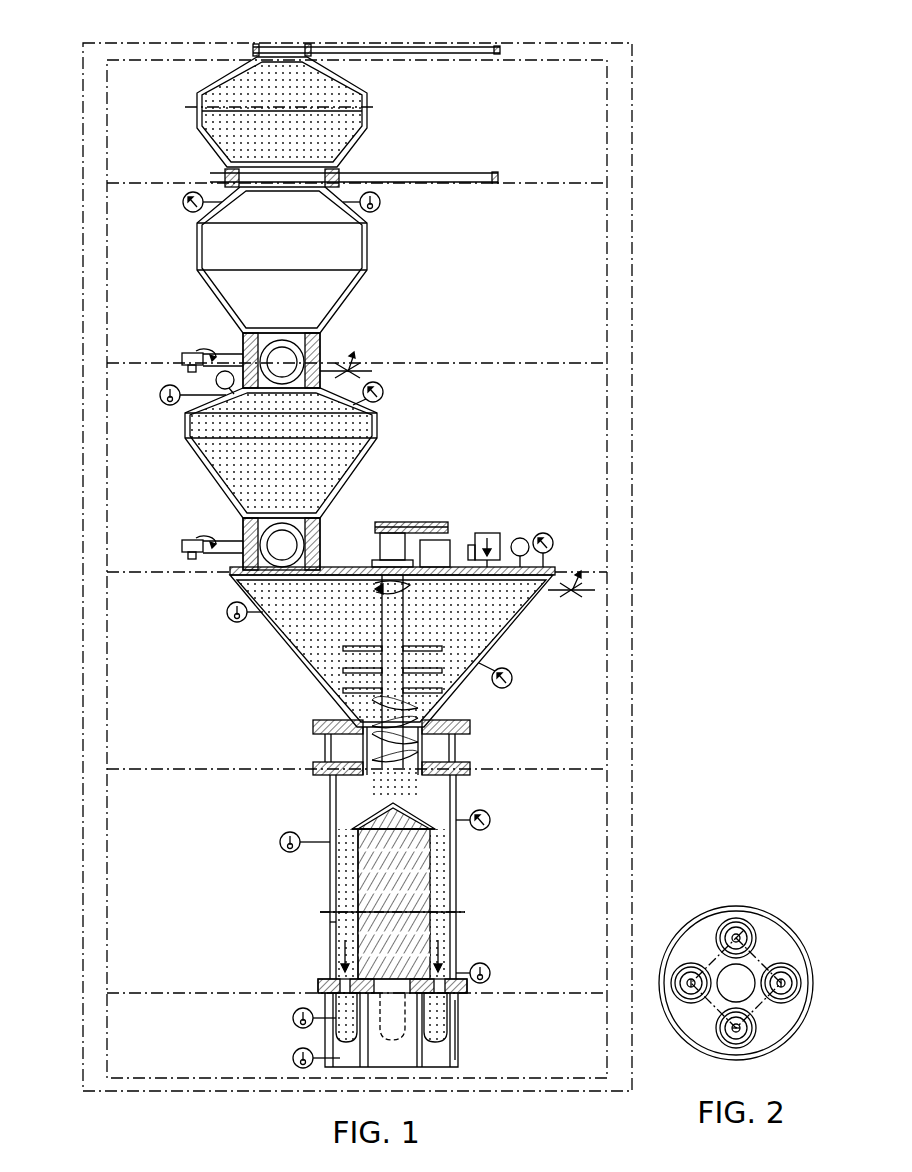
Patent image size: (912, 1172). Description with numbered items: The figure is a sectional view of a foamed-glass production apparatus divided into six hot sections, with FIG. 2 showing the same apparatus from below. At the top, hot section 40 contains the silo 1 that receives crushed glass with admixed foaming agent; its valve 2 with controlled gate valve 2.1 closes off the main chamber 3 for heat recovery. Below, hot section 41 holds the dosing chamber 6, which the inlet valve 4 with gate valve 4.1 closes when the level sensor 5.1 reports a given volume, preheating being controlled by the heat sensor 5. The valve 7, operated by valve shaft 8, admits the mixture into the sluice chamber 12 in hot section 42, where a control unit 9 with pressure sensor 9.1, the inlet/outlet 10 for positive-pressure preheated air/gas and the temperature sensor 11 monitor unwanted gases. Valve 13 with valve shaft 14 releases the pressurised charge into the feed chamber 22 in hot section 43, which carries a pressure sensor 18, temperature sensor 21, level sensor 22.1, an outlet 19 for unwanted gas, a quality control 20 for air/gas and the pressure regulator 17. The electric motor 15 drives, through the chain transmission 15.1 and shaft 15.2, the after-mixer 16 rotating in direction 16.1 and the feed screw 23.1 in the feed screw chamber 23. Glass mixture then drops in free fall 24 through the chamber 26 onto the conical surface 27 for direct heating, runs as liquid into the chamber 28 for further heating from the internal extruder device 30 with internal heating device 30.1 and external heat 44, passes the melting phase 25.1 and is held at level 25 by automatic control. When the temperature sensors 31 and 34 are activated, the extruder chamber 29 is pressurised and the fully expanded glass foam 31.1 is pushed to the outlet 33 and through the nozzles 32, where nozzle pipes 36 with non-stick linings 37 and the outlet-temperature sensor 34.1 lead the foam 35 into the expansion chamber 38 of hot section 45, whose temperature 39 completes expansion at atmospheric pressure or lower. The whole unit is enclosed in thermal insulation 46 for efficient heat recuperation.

In FIG. 1, the silo 1 is at (345, 86).
In FIG. 1, the valve for inlet to silo 2 is at (300, 45).
In FIG. 1, the controlled gate valve 2.1 is at (500, 50).
In FIG. 1, the main chamber 3 is at (355, 100).
In FIG. 1, the valve for inlet to dosing chamber 4 is at (340, 174).
In FIG. 1, the gate valve 4.1 is at (495, 173).
In FIG. 1, the temperature sensor/manometer 5 is at (378, 210).
In FIG. 1, the level sensor 5.1 is at (185, 206).
In FIG. 1, the dosing chamber 6 is at (215, 251).
In FIG. 1, the valve for inlet to sluice chamber 7 is at (313, 352).
In FIG. 1, the valve shaft 8 is at (186, 353).
In FIG. 1, the control unit for air/gas 9 is at (216, 380).
In FIG. 1, the pressure sensor/manometer 9.1 is at (383, 392).
In FIG. 1, the inlet/outlet for positive pressure pre-heated air/gas 10 is at (360, 366).
In FIG. 1, the temperature sensor/manometer 11 is at (163, 402).
In FIG. 1, the sluice chamber 12 is at (365, 447).
In FIG. 1, the valve for outlet from the sluice chamber 13 is at (246, 527).
In FIG. 1, the valve shaft 14 is at (182, 547).
In FIG. 1, the electric motor 15 is at (446, 552).
In FIG. 1, the chain transmission 15.1 is at (407, 521).
In FIG. 1, the shaft for feed screw 15.2 is at (380, 546).
In FIG. 1, the after-mixer 16 is at (343, 650).
In FIG. 1, the direction of rotation of the feed screw 16.1 is at (413, 586).
In FIG. 1, the pressure regulator 17 is at (487, 533).
In FIG. 1, the pressure sensor/manometer 18 is at (551, 536).
In FIG. 1, the outlet for unwanted gas 19 is at (560, 597).
In FIG. 1, the quality control of air/gas 20 is at (522, 538).
In FIG. 1, the temperature sensor/manometer 21 is at (233, 622).
In FIG. 1, the feed chamber 22 is at (493, 633).
In FIG. 1, the level sensor 22.1 is at (510, 688).
In FIG. 1, the feed screw chamber 23 is at (470, 748).
In FIG. 1, the feed screw 23.1 is at (367, 742).
In FIG. 1, the glass flour with foaming agent in free fall 24 is at (370, 793).
In FIG. 1, the level sensor/manometer for max/minimum level 25 is at (492, 818).
In FIG. 1, the further heating phase/melting phase 25.1 is at (357, 826).
In FIG. 1, the extruder chamber 26 is at (342, 800).
In FIG. 1, the conical surface for direct heat transfer 27 is at (427, 822).
In FIG. 1, the glass flour with foaming agent in expansion phase 28 is at (343, 897).
In FIG. 1, the extruder chamber 29 is at (330, 922).
In FIG. 1, the internal extruder device 30 is at (423, 892).
In FIG. 1, the internal heating device 30.1 is at (417, 868).
In FIG. 1, the temperature sensor/manometer 31 is at (281, 848).
In FIG. 1, the fully expanded glass foam in the extruder chamber 31.1 is at (447, 925).
In FIG. 1, the nozzle location and arrangement 32 is at (328, 979).
In FIG. 2, the nozzle location and arrangement 32 is at (758, 913).
In FIG. 1, the outlet to the nozzle 33 is at (447, 957).
In FIG. 1, the surface temperature sensor/manometer 34 is at (492, 973).
In FIG. 1, the outlet temperature sensor/manometer 34.1 is at (292, 1016).
In FIG. 1, the glass foam exiting nozzle 35 is at (447, 1020).
In FIG. 1, the external nozzle pipe 36 is at (455, 1033).
In FIG. 1, the lining 37 is at (455, 1048).
In FIG. 2, the lining 37 is at (723, 918).
In FIG. 1, the expansion chamber 38 is at (342, 1037).
In FIG. 2, the expansion chamber 38 is at (677, 968).
In FIG. 1, the temperature sensor/manometer for expansion zone 39 is at (292, 1058).
In FIG. 1, the heat for silo section 40 is at (607, 137).
In FIG. 1, the heat for dosing chamber 41 is at (607, 268).
In FIG. 1, the heat for sluice chamber 42 is at (607, 458).
In FIG. 1, the heat for feed chamber 43 is at (607, 676).
In FIG. 1, the external heat for extruder chamber 44 is at (607, 845).
In FIG. 1, the heat for expansion chamber 45 is at (607, 1045).
In FIG. 1, the thermal insulation 46 is at (83, 832).